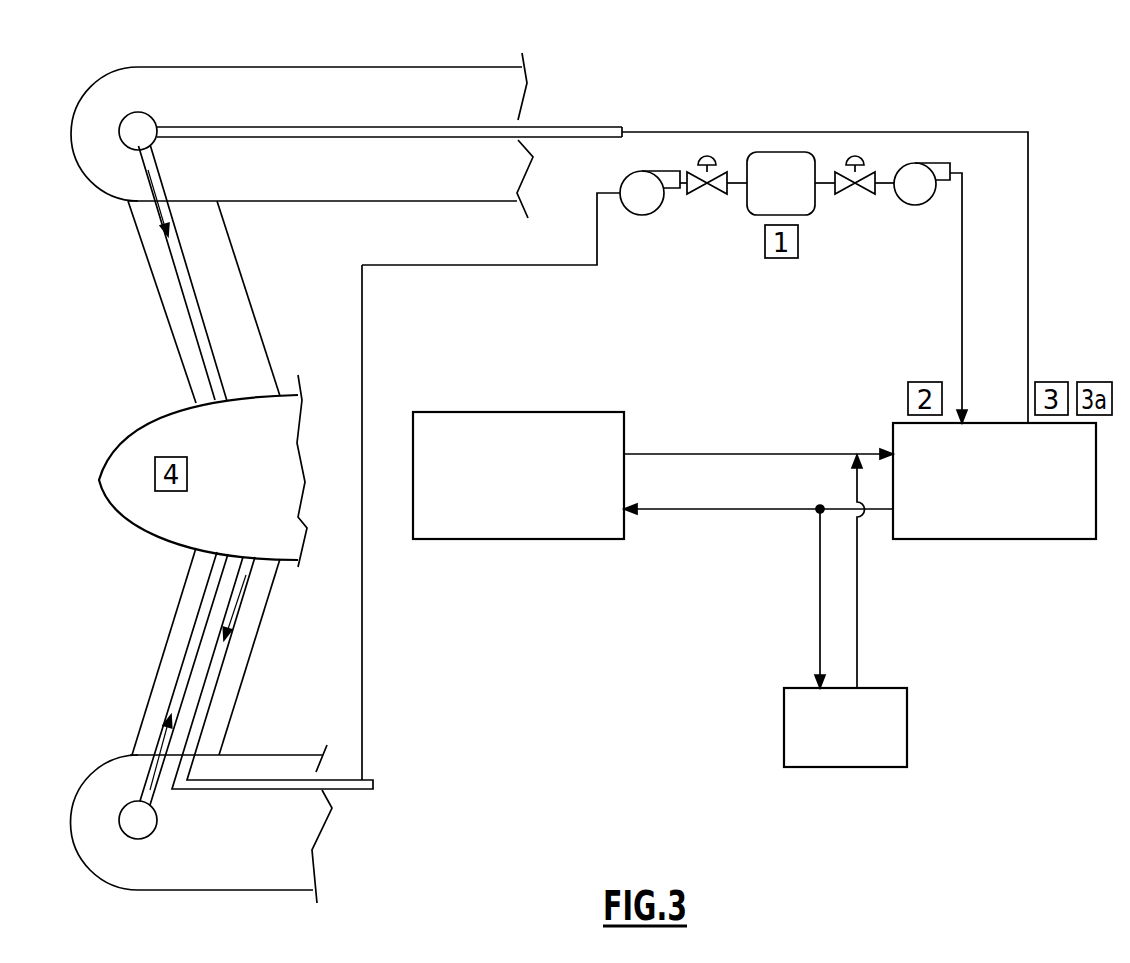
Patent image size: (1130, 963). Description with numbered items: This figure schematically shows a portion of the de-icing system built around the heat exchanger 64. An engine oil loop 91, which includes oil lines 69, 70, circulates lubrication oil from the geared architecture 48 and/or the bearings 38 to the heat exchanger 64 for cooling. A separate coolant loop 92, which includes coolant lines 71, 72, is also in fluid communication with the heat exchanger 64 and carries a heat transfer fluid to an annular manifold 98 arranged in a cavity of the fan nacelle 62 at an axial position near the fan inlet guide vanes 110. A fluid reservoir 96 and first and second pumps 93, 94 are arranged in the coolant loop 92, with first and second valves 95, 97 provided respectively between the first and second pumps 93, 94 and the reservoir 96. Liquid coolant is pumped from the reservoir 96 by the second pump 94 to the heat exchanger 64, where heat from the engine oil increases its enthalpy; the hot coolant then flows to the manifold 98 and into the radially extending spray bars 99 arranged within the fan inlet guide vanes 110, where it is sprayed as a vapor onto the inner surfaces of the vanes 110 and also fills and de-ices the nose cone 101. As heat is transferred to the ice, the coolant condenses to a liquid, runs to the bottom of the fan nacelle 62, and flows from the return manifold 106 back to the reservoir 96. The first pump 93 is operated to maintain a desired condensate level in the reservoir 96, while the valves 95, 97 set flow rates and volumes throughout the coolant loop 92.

The fan nacelle 62 is at (530, 66).
The annular manifold 98 is at (121, 120).
The spray bars 99 is at (176, 274).
The fan inlet guide vanes 110 is at (254, 311).
The nose cone 101 is at (114, 446).
The return manifold 106 is at (224, 665).
The coolant line 71 is at (1028, 346).
The first pump 93 is at (643, 217).
The first valve 95 is at (716, 195).
The fluid reservoir 96 is at (769, 196).
The second valve 97 is at (866, 196).
The second pump 94 is at (914, 206).
The coolant line 72 is at (962, 328).
The coolant loop 92 is at (988, 96).
The geared architecture 48 is at (505, 491).
The heat exchanger 64 is at (981, 492).
The oil line 69 is at (652, 453).
The oil line 70 is at (665, 511).
The engine oil loop 91 is at (737, 524).
The bearings 38 is at (833, 739).